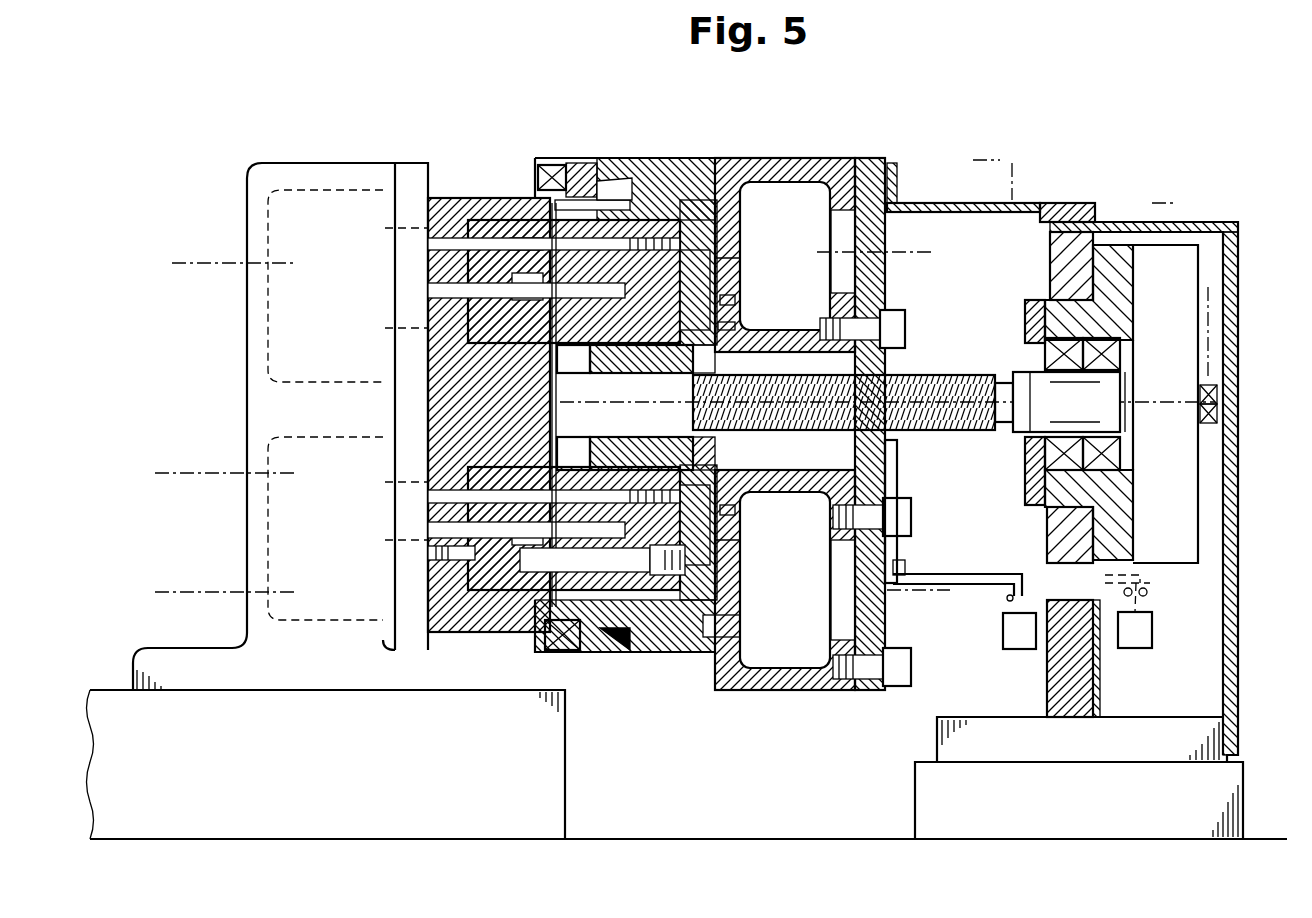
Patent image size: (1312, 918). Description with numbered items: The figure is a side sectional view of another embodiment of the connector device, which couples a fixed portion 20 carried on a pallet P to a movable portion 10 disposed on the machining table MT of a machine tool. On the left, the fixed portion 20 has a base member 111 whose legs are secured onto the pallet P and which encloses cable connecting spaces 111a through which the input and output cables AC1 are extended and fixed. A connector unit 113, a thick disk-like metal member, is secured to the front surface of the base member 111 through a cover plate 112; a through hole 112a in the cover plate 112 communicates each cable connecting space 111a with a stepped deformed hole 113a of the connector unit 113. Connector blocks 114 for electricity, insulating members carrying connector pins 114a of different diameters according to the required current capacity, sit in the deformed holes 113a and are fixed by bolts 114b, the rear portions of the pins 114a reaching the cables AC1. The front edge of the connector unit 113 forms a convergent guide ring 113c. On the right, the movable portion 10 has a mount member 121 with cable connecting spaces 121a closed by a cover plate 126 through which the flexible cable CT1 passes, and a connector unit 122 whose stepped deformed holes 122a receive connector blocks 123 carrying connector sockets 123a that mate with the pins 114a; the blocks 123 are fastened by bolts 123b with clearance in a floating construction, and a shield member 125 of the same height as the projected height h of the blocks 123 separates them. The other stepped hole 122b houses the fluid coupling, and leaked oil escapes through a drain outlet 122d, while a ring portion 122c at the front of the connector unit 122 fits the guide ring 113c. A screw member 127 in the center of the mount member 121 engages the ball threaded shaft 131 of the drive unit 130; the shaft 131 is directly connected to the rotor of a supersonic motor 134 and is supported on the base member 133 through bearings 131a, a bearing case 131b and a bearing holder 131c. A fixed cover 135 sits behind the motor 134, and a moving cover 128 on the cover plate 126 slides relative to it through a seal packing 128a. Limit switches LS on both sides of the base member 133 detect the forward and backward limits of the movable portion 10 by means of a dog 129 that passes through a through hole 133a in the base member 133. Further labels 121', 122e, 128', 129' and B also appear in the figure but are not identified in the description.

The movable portion 10 is at (853, 157).
The fixed portion 20 is at (470, 197).
The base member 111 is at (247, 366).
The cable connecting spaces 111a is at (268, 324).
The cover plate 112 is at (415, 162).
The through hole 112a is at (400, 232).
The connector unit 113 is at (496, 197).
The stepped deformed holes 113a is at (468, 305).
The convergent guide ring 113c is at (587, 648).
The connector block for electricity 114 is at (468, 364).
The connector pins 114a is at (470, 262).
The bolts 114b is at (470, 566).
The mount member 121 is at (785, 391).
The cable connecting spaces 121a is at (802, 157).
The housing 121' is at (1012, 151).
The connector unit 122 is at (667, 160).
The stepped deformed holes 122a is at (740, 258).
The stepped hole 122b is at (565, 170).
The ring portion 122c is at (540, 158).
The drain outlet 122d is at (620, 647).
The groove 122e is at (735, 327).
The connector blocks for electricity 123 is at (605, 395).
The connector sockets 123a is at (640, 160).
The bolts 123b is at (602, 561).
The shield member 125 is at (597, 373).
The cover plate 126 is at (890, 300).
The screw member 127 is at (870, 455).
The moving cover 128 is at (963, 187).
The seal packing 128a is at (1090, 203).
The bracket 128' is at (1199, 174).
The dog 129 is at (964, 569).
The sensor bracket 129' is at (1163, 595).
The drive unit 130 is at (1020, 497).
The ball threaded shaft 131 is at (938, 380).
The bearings 131a is at (1030, 345).
The bearing case 131b is at (1118, 290).
The bearing holder 131c is at (1025, 318).
The base member 133 is at (1047, 265).
The through hole 133a is at (1065, 595).
The supersonic motor 134 is at (1182, 522).
The fixed cover 135 is at (1232, 351).
The input and output cables AC1 is at (183, 262).
The flexible cable CT1 is at (940, 255).
The limit switches LS is at (1015, 650).
The projected height h is at (565, 405).
The pallet P is at (558, 786).
The machining table MT is at (678, 839).
The base B is at (916, 808).